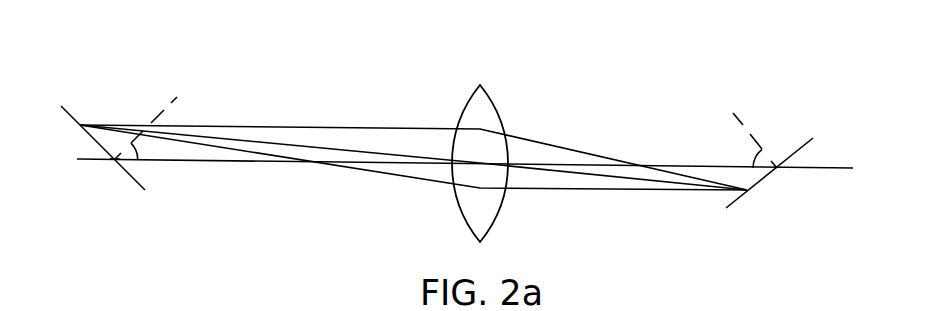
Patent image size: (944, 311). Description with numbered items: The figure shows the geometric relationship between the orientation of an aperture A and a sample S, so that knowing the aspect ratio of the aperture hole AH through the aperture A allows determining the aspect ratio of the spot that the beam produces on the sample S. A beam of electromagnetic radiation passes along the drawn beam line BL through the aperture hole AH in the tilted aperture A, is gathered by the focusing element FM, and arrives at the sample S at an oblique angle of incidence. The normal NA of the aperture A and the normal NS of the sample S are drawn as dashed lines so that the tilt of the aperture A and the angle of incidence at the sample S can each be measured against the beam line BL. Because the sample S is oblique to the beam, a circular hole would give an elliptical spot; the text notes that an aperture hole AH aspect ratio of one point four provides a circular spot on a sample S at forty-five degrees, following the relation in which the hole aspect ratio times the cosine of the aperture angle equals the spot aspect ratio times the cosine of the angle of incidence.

The normal of deflection mirror A NA is at (160, 105).
The aperture hole AH is at (114, 165).
The aperture A is at (143, 194).
The focusing lens / focusing element FM is at (498, 110).
The optical axis / beam line BL is at (699, 164).
The normal of mirror S NS is at (745, 124).
The sample S is at (769, 180).